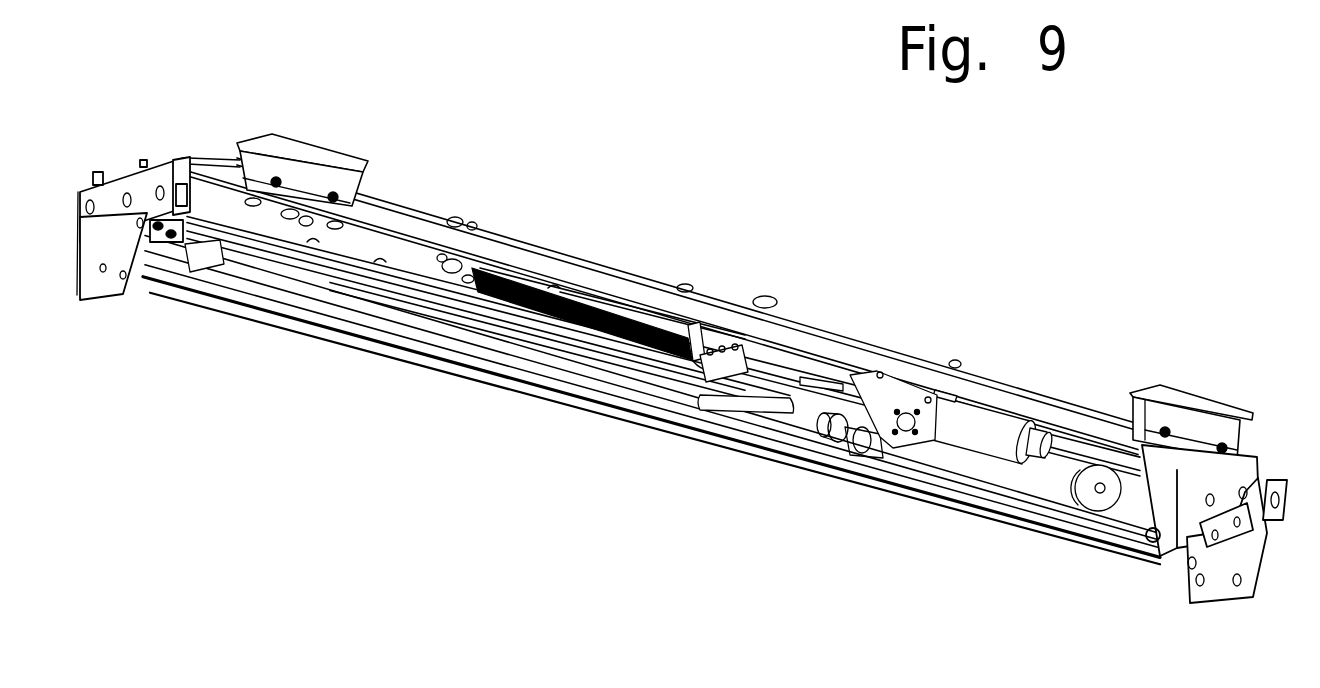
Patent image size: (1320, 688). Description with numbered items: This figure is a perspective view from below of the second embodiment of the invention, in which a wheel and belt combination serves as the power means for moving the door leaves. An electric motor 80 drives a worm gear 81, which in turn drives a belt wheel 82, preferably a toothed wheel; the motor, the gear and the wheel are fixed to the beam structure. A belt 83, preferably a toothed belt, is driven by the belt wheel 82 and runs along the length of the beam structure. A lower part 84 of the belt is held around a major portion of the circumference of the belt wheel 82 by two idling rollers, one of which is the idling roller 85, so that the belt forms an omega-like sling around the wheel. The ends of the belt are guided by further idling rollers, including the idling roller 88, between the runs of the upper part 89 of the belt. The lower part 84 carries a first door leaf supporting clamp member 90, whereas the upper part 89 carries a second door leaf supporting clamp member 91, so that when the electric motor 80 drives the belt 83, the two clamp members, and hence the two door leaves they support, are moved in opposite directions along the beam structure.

The electric motor 80 is at (1012, 423).
The worm gear 81 is at (913, 395).
The belt wheel 82 is at (883, 450).
The belt 83 is at (815, 377).
The lower part of the belt 84 is at (370, 317).
The idling roller 85 is at (833, 443).
The idling roller 88 is at (1100, 507).
The upper part of the belt 89 is at (407, 270).
The first door leaf supporting clamp member 90 is at (200, 262).
The second door leaf supporting clamp member 91 is at (731, 373).